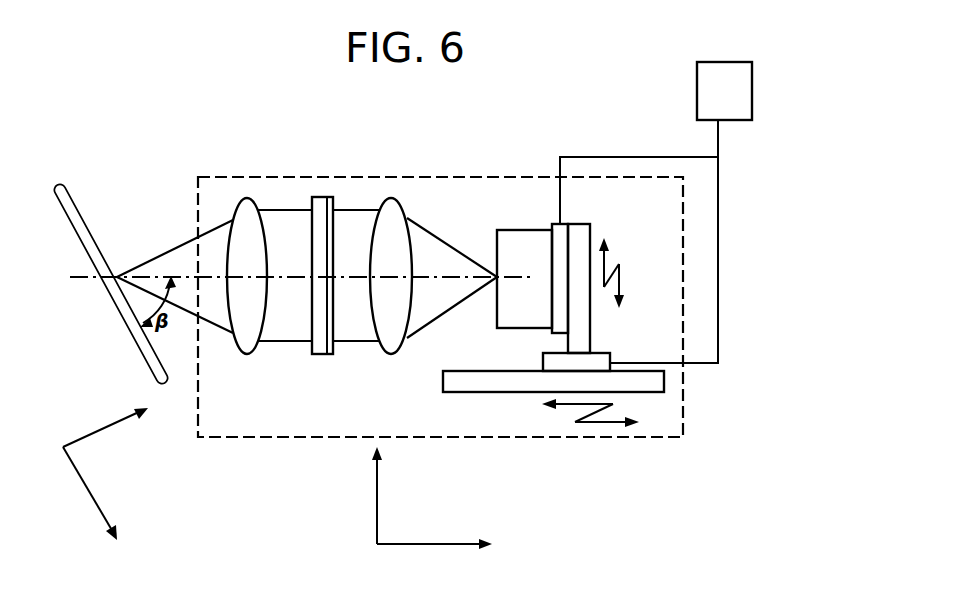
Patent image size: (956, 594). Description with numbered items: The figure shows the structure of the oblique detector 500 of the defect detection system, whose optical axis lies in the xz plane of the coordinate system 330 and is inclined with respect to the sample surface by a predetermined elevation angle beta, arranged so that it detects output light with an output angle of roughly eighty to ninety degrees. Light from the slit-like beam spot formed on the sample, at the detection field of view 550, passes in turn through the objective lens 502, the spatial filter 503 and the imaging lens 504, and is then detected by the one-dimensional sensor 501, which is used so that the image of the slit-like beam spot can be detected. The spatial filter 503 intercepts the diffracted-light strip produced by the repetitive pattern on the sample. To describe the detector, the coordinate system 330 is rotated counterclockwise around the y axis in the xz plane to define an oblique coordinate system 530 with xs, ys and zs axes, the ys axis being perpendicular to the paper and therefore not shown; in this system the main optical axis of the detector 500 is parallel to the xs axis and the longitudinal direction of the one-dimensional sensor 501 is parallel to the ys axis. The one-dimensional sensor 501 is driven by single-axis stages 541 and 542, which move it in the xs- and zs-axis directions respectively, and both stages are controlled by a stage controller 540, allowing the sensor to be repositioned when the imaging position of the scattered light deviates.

The coordinate system 330 is at (92, 432).
The oblique detector 500 is at (363, 177).
The one-dimensional sensor 501 is at (507, 230).
The objective lens 502 is at (245, 355).
The spatial filter 503 is at (323, 355).
The imaging lens 504 is at (392, 354).
The oblique coordinate system 530 is at (377, 512).
The stage controller 540 is at (697, 93).
The single-axis stage 541 is at (630, 337).
The single-axis stage 542 is at (564, 224).
The detection field of view 550 is at (117, 277).